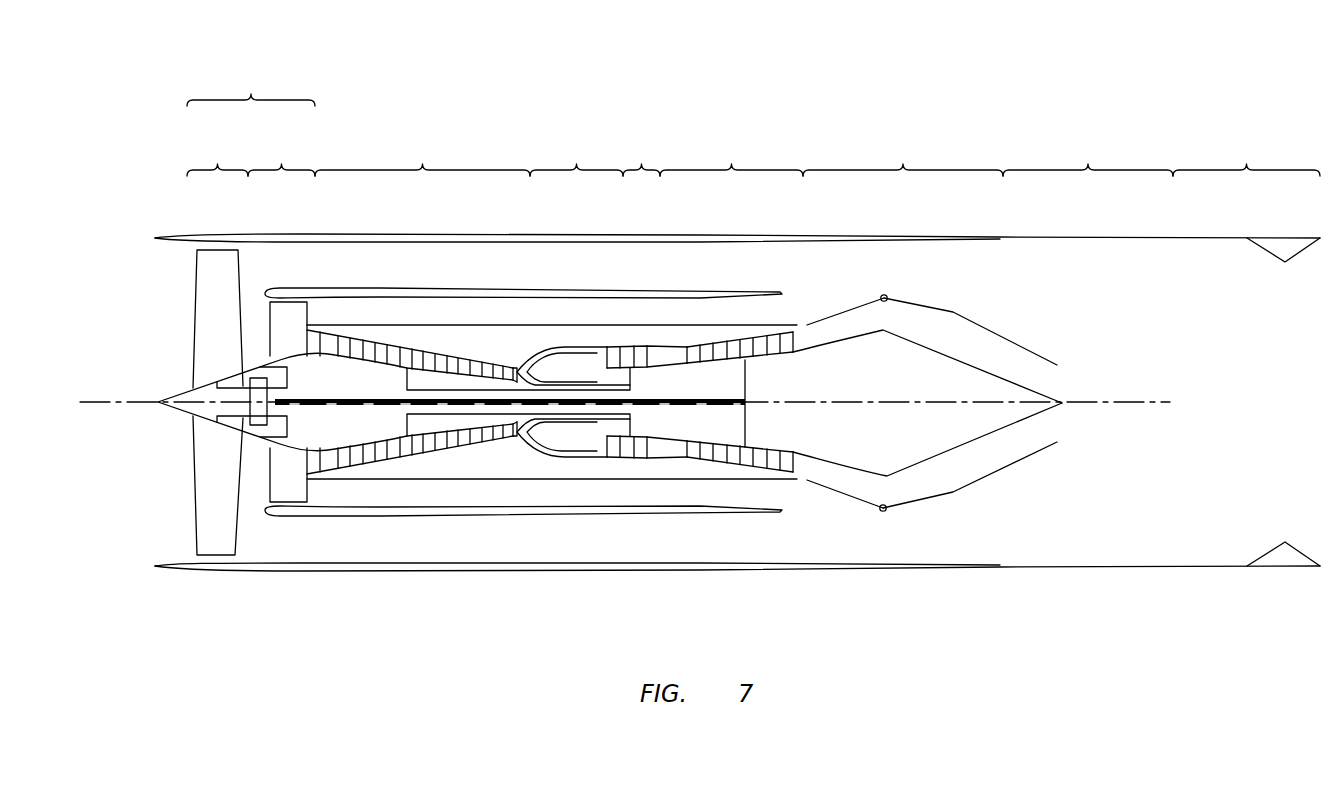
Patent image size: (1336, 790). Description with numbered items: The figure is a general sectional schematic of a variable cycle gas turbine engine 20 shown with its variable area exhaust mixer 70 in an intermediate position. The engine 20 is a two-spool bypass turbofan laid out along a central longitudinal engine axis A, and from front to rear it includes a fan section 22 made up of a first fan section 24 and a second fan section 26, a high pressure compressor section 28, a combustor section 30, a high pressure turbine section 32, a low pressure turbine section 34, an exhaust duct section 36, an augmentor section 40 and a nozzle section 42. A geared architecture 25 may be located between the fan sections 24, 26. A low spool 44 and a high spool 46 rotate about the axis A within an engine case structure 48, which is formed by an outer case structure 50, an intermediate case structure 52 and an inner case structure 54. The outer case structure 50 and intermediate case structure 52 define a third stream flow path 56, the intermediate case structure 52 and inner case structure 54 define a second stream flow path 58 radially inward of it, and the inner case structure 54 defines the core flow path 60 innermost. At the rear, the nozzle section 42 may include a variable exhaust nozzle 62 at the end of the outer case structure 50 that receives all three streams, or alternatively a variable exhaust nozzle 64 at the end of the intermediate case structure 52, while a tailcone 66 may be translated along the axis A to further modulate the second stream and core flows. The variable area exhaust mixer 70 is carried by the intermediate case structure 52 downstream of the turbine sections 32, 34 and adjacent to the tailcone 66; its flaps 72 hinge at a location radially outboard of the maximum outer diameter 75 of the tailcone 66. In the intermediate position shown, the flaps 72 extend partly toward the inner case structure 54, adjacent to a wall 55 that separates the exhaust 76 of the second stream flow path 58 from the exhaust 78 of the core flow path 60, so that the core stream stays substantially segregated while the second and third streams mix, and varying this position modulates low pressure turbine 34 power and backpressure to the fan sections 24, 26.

The gas turbine engine 20 is at (800, 112).
The fan section 22 is at (251, 84).
The first fan section 24 is at (217, 342).
The geared architecture 25 is at (260, 395).
The second fan section 26 is at (281, 315).
The high pressure compressor section 28 is at (418, 255).
The combustor section 30 is at (576, 152).
The high pressure turbine section 32 is at (647, 293).
The low pressure turbine section 34 is at (731, 300).
The exhaust duct section 36 is at (903, 152).
The augmentor section 40 is at (1088, 152).
The nozzle section 42 is at (1246, 152).
The low spool 44 is at (680, 401).
The high spool 46 is at (437, 420).
The engine case structure 48 is at (390, 581).
The outer case structure 50 is at (437, 572).
The intermediate case structure 52 is at (520, 516).
The inner case structure 54 is at (588, 478).
The wall 55 is at (808, 484).
The third stream flow path 56 is at (414, 278).
The second stream flow path 58 is at (428, 321).
The core flow path 60 is at (484, 375).
The variable exhaust nozzle 62 is at (1274, 263).
The variable exhaust nozzle 64 is at (1012, 337).
The tailcone 66 is at (948, 442).
The variable area exhaust mixer 70 is at (861, 281).
The flaps 72 is at (833, 312).
The maximum outer diameter 75 is at (883, 330).
The exhaust 76 is at (773, 494).
The exhaust 78 is at (807, 470).
The engine axis A is at (112, 402).